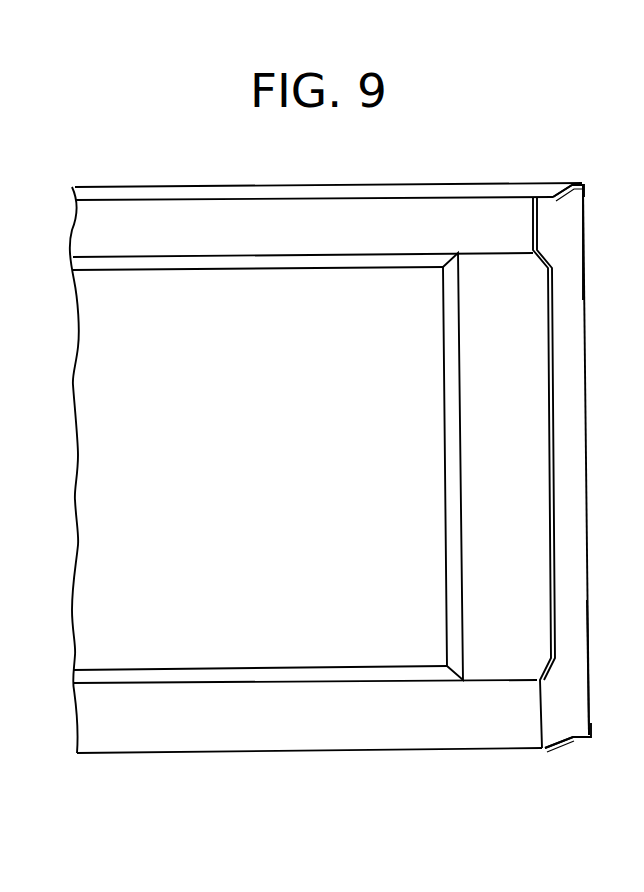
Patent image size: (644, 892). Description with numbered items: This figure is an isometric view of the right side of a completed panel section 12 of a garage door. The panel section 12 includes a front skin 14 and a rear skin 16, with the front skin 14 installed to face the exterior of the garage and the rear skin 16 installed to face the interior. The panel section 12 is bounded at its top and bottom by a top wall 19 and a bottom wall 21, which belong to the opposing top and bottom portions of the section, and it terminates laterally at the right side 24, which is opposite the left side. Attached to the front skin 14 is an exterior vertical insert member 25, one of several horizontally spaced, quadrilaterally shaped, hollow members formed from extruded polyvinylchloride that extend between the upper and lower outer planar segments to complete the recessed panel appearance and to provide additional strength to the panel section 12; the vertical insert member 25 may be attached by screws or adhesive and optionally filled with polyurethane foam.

The panel section 12 is at (588, 155).
The front skin 14 is at (330, 652).
The rear skin 16 is at (588, 655).
The top wall 19 is at (555, 196).
The bottom wall 21 is at (577, 740).
The right side 24 is at (571, 421).
The vertical insert member 25 is at (510, 479).